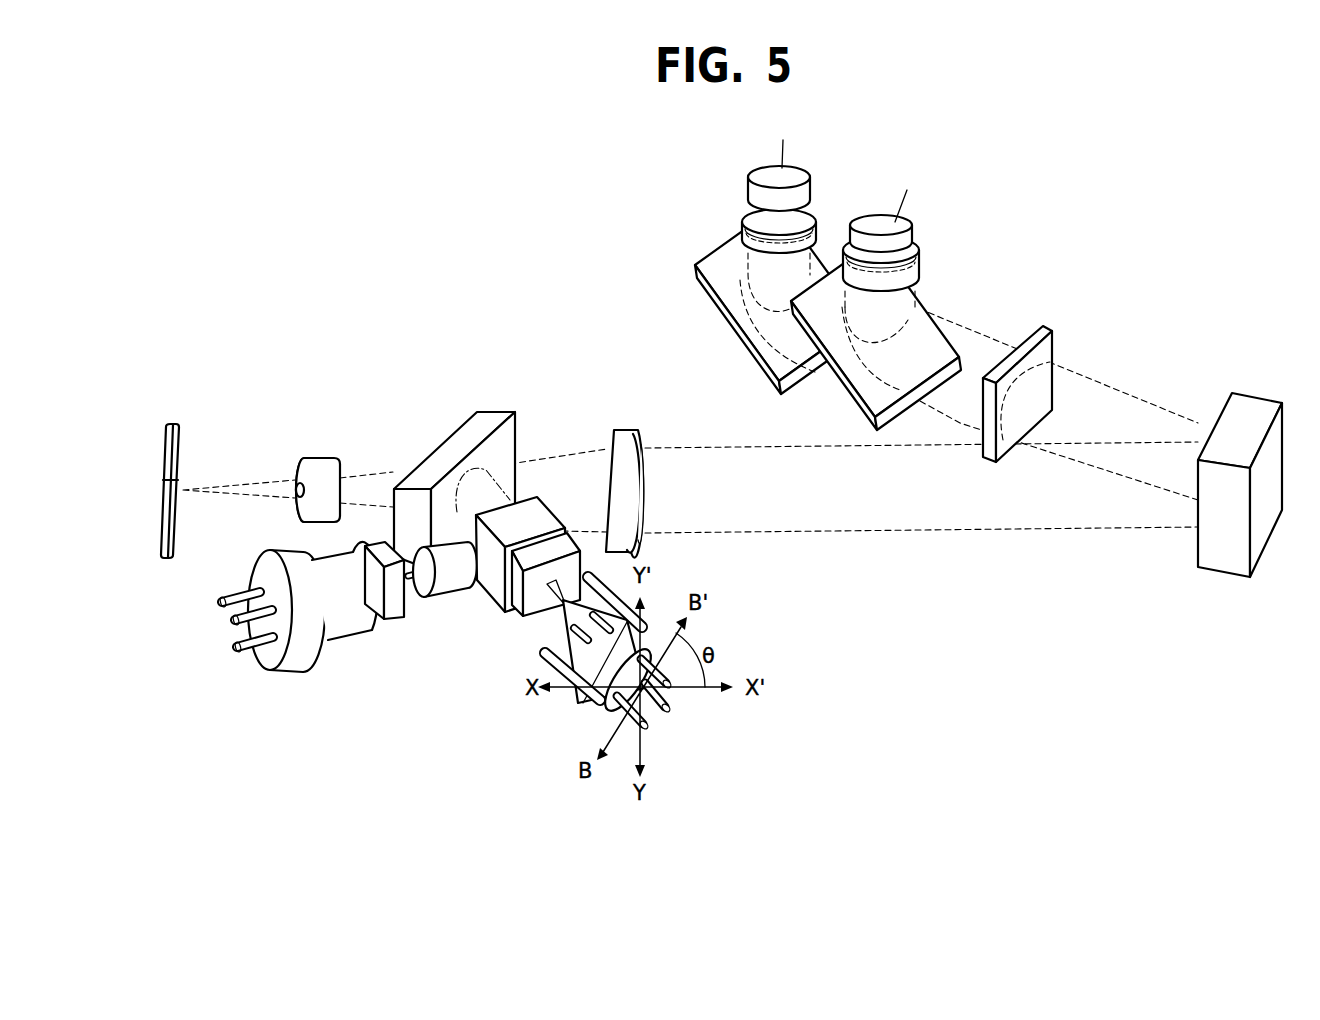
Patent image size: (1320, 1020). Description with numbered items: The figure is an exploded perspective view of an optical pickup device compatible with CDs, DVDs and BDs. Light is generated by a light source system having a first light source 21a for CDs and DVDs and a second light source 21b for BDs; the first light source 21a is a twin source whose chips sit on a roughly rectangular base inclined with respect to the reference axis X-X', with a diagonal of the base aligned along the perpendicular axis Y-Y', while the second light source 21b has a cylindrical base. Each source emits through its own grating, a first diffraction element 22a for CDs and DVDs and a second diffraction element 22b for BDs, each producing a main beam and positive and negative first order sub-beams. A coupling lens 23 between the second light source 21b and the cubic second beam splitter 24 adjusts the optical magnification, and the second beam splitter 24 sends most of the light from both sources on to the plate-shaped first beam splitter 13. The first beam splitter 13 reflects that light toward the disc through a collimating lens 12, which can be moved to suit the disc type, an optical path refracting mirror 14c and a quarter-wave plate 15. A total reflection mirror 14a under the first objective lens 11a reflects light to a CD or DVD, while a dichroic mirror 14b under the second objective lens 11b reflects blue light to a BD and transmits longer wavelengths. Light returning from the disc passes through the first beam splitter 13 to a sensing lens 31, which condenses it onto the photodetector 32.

The first objective lens 11a is at (817, 218).
The second objective lens 11b is at (918, 257).
The collimating lens 12 is at (625, 430).
The first beam splitter 13 is at (493, 412).
The total reflection mirror 14a is at (718, 300).
The dichroic mirror 14b is at (852, 393).
The optical path refracting mirror 14c is at (1257, 403).
The quarter-wave plate 15 is at (1045, 325).
The first light source 21a is at (562, 716).
The second light source 21b is at (280, 689).
The first diffraction element 22a is at (513, 617).
The second diffraction element 22b is at (397, 623).
The coupling lens 23 is at (431, 598).
The second beam splitter 24 is at (497, 590).
The sensing lens 31 is at (320, 456).
The photodetector 32 is at (173, 423).